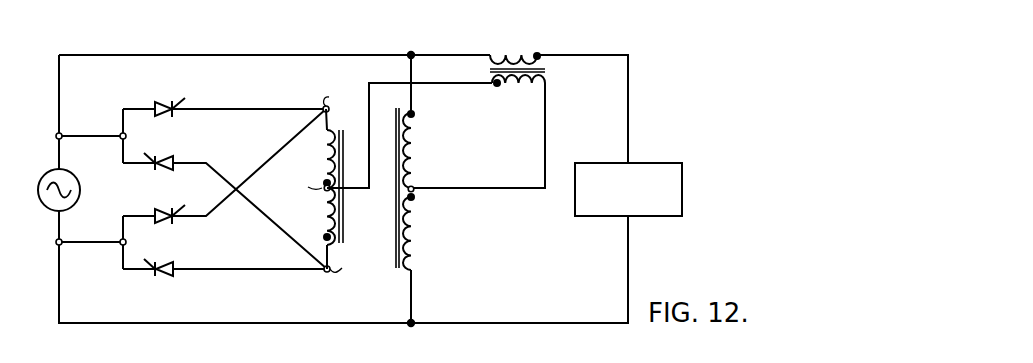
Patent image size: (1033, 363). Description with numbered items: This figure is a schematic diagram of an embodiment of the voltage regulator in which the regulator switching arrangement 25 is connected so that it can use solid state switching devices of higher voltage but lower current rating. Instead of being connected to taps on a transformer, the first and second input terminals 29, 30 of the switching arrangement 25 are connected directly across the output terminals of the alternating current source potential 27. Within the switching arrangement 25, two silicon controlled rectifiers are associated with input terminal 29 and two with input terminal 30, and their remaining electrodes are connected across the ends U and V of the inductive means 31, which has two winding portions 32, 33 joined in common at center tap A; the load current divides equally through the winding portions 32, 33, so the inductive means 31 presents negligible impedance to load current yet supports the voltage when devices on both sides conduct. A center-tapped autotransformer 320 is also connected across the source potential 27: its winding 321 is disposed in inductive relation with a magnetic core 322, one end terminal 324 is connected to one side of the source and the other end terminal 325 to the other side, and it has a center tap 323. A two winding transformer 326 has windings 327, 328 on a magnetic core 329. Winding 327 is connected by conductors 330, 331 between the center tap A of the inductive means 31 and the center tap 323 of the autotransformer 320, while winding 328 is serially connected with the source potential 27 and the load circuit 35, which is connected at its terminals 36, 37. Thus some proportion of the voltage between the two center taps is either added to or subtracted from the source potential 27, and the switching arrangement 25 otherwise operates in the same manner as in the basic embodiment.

The regulator switching arrangement 25 is at (254, 151).
The source potential 27 is at (44, 175).
The first input terminal 29 is at (123, 137).
The second input terminal 30 is at (123, 243).
The inductive means 31 is at (327, 189).
The winding portion 32 is at (322, 162).
The winding portion 33 is at (322, 213).
The load circuit 35 is at (683, 181).
The terminal 36 is at (630, 163).
The terminal 37 is at (630, 216).
The center-tapped autotransformer 320 is at (419, 188).
The winding 321 is at (415, 244).
The magnetic core 322 is at (398, 268).
The center tap 323 is at (416, 190).
The end terminal 324 is at (410, 55).
The end terminal 325 is at (411, 323).
The two winding transformer 326 is at (520, 71).
The winding 327 is at (512, 85).
The winding 328 is at (508, 55).
The magnetic core 329 is at (490, 70).
The conductor 330 is at (387, 83).
The conductor 331 is at (500, 189).